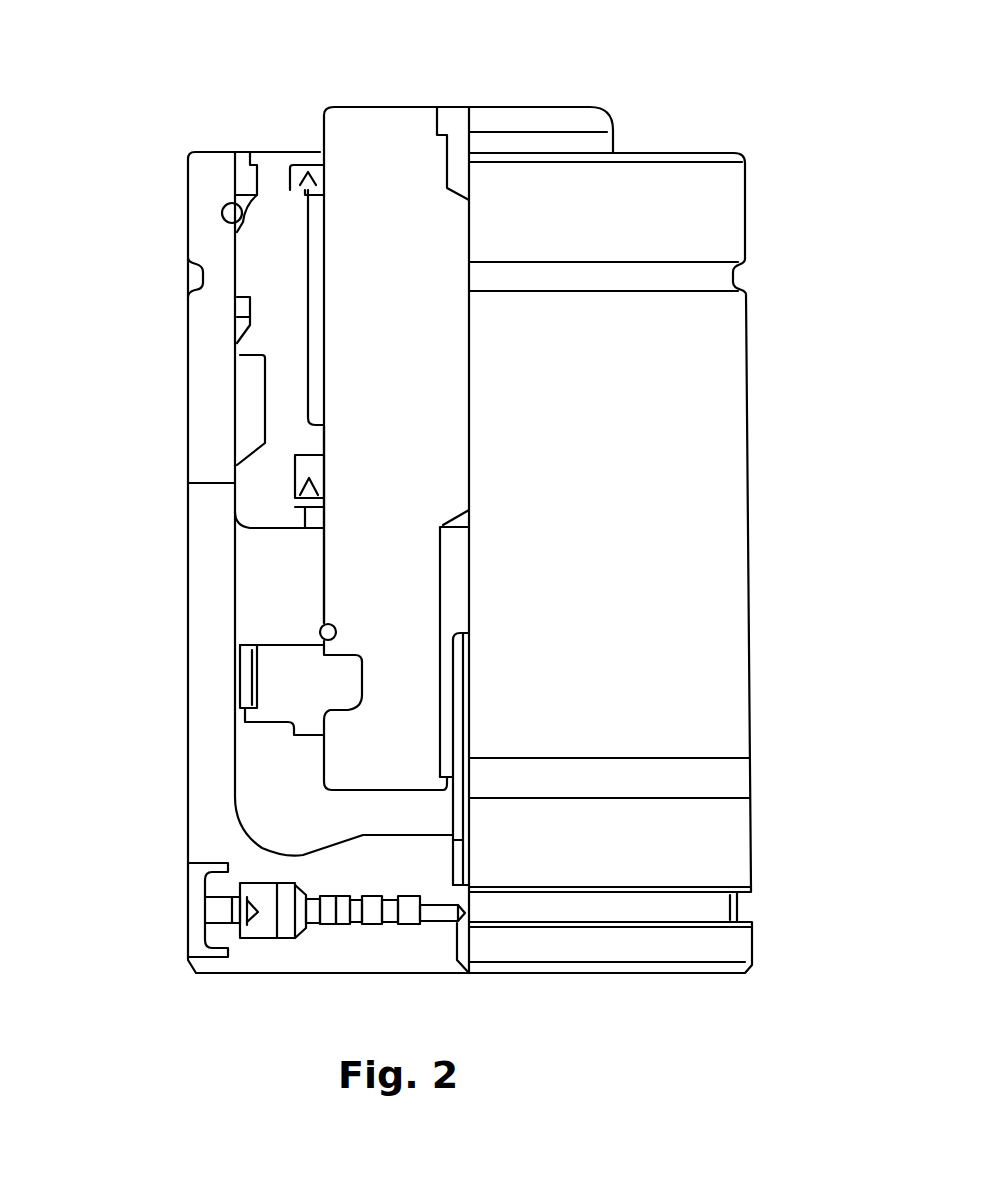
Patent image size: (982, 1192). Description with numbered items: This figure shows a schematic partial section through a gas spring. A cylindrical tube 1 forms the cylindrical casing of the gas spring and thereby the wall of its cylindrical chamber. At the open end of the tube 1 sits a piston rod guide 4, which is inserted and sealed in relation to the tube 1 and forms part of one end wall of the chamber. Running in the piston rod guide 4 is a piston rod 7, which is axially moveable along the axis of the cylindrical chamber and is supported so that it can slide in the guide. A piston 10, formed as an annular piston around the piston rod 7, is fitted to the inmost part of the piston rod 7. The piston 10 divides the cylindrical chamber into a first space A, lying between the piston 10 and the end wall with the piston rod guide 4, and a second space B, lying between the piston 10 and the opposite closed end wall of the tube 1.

The cylindrical tube 1 is at (748, 476).
The piston rod 7 is at (378, 167).
The piston rod guide 4 is at (272, 285).
The first space A is at (268, 563).
The piston 10 is at (287, 668).
The second space B is at (302, 763).